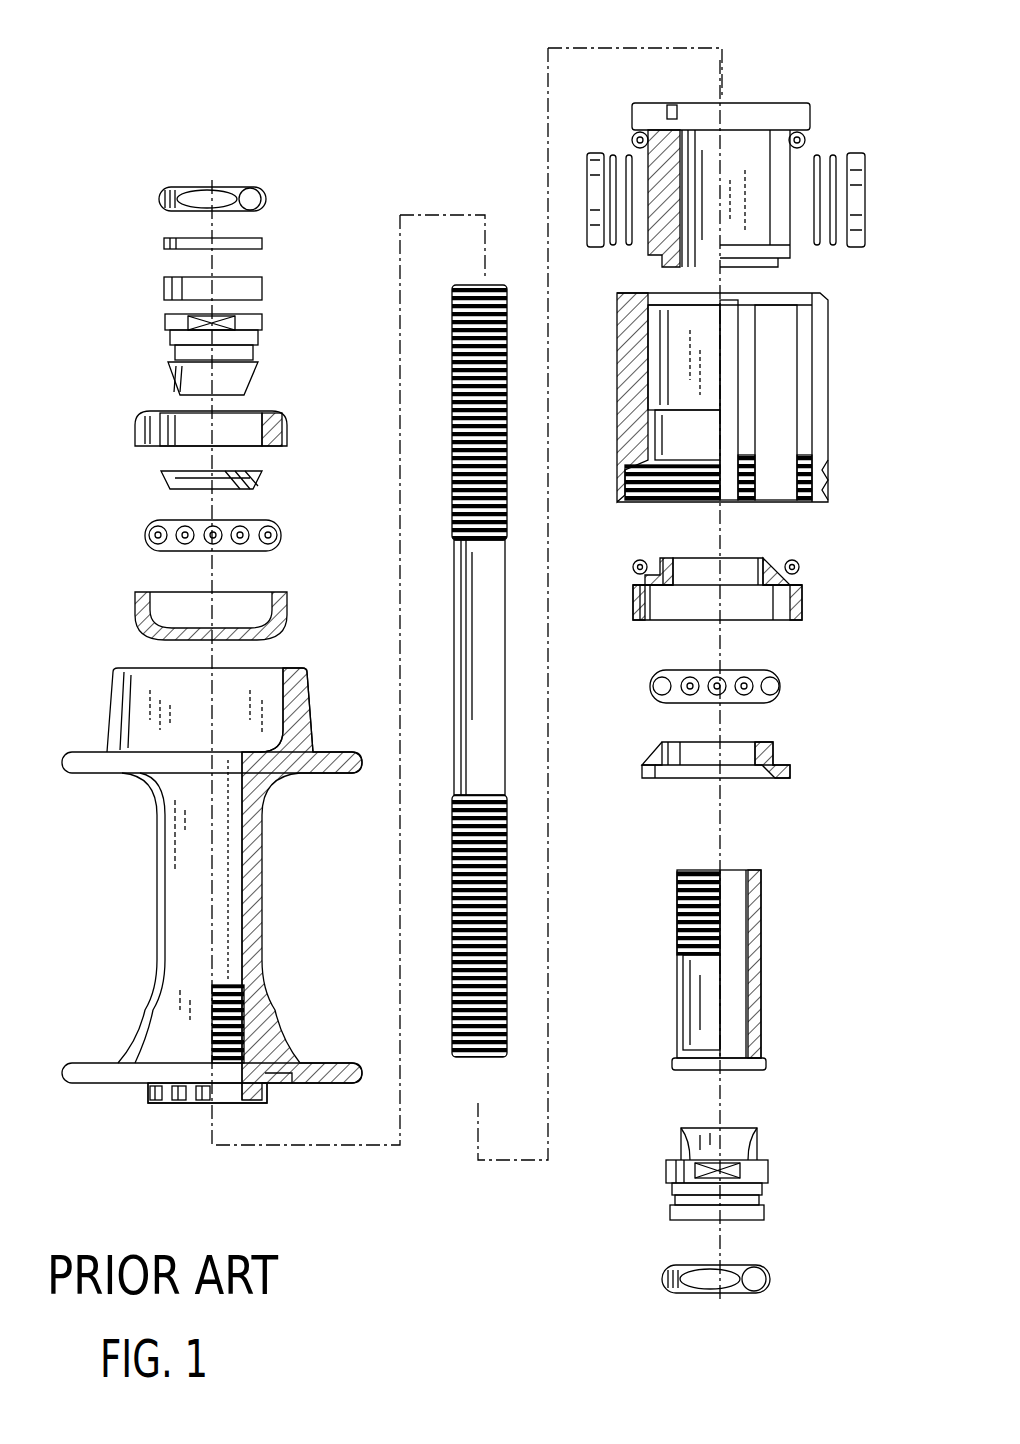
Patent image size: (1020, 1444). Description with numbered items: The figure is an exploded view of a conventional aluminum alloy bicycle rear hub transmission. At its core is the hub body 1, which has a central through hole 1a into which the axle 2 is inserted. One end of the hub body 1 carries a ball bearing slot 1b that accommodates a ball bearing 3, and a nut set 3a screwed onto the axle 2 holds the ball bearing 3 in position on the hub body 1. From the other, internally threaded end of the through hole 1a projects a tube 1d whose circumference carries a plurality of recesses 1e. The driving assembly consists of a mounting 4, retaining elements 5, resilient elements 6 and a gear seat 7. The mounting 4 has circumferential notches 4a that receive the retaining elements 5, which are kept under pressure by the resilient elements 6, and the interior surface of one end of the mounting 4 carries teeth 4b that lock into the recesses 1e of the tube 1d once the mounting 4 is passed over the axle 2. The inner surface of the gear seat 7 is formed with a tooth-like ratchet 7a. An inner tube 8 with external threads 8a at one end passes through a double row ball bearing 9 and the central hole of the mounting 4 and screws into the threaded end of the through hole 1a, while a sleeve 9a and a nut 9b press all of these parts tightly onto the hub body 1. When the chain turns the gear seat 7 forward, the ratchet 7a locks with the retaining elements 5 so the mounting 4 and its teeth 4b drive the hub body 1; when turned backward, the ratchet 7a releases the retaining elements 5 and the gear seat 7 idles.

The hub body 1 is at (265, 835).
The through hole 1a is at (230, 882).
The ball bearing slot 1b is at (268, 720).
The tube 1d is at (147, 1092).
The recesses 1e is at (165, 1105).
The axle 2 is at (452, 700).
The ball bearing 3 is at (300, 455).
The nut set 3a is at (283, 195).
The mounting 4 is at (812, 118).
The notches 4a is at (783, 252).
The teeth 4b is at (675, 103).
The retaining elements 5 is at (866, 205).
The resilient elements 6 is at (836, 250).
The gear seat 7 is at (843, 408).
The tooth-like ratchet 7a is at (648, 358).
The inner tube 8 is at (762, 975).
The external threads 8a is at (760, 925).
The double row ball bearing 9 is at (818, 600).
The sleeve 9a is at (770, 1178).
The nut 9b is at (772, 1283).